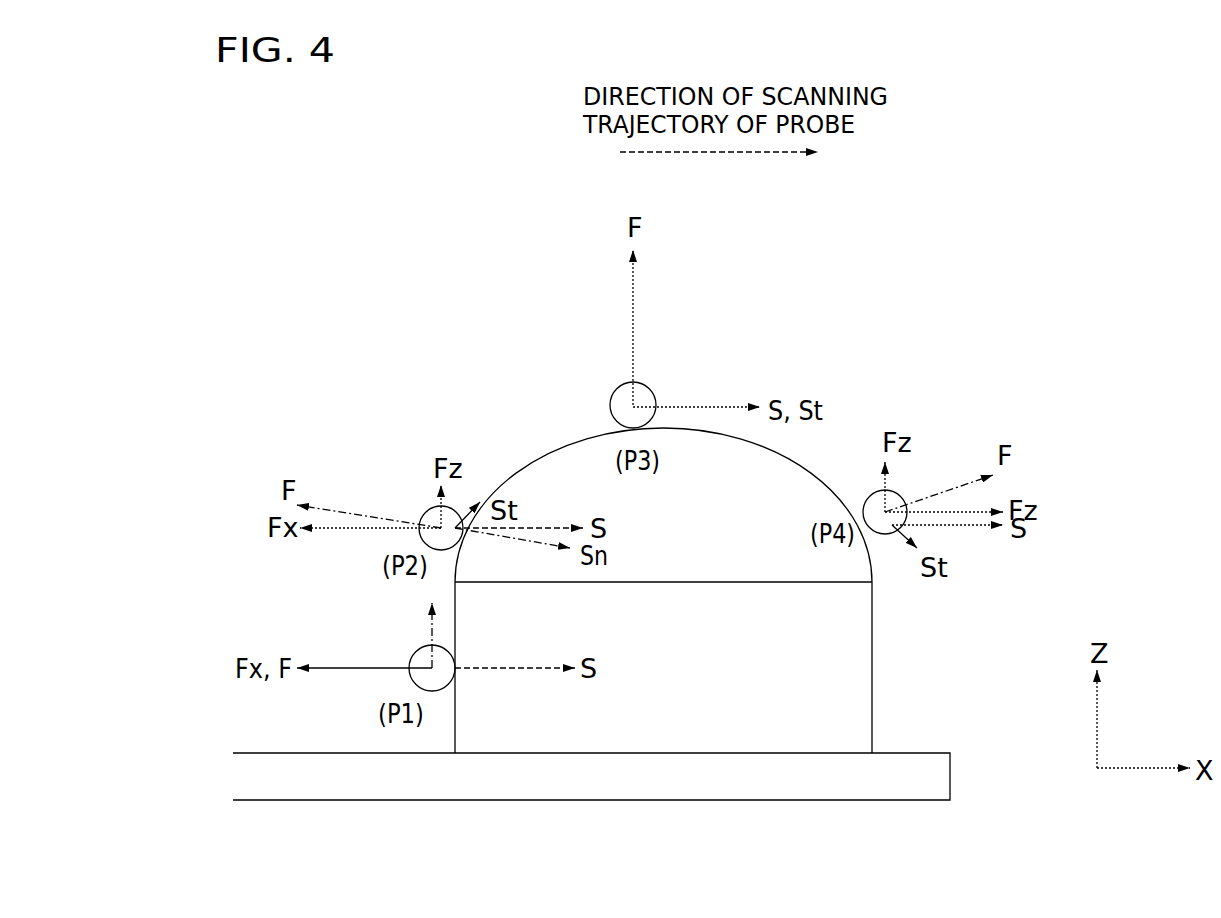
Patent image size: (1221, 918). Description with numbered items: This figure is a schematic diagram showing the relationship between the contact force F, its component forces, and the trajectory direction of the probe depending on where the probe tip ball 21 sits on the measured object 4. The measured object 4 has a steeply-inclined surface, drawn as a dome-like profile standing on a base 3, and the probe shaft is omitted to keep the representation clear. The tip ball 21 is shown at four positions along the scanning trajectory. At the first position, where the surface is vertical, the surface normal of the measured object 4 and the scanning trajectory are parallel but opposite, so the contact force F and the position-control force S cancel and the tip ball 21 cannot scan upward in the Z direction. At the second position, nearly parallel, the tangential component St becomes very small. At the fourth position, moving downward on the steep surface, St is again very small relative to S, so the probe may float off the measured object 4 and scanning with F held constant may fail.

The tip ball 21 is at (657, 386).
The measured object 4 is at (872, 668).
The table (stage) 3 is at (950, 762).